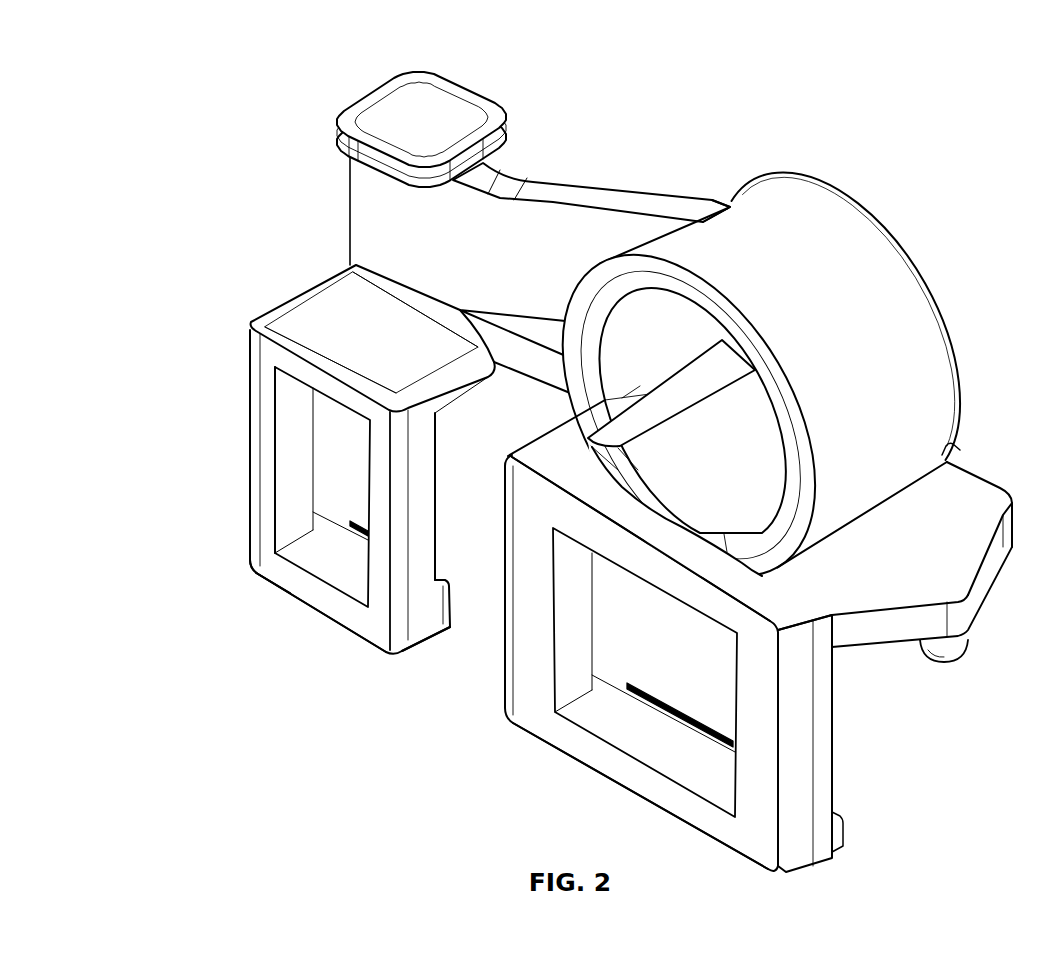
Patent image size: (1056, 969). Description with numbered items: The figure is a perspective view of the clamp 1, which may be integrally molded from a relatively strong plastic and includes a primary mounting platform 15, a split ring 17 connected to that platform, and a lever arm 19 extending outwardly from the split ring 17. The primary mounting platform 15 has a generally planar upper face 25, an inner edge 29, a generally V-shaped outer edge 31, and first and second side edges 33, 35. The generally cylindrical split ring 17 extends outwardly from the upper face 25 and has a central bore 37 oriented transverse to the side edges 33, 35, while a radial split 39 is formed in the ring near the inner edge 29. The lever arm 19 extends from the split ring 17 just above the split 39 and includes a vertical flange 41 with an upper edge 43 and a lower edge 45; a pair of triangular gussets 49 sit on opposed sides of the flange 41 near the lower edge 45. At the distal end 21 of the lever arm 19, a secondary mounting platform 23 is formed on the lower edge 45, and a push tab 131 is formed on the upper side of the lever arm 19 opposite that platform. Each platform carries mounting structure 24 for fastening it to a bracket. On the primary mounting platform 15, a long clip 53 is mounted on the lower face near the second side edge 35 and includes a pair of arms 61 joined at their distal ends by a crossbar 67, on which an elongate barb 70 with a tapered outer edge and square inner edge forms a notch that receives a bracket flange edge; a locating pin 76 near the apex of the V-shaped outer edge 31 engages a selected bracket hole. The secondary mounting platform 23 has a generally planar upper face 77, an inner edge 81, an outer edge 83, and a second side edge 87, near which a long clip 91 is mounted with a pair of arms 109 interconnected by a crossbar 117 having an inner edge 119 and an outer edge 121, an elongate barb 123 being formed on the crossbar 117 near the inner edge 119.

The clamp 1 is at (858, 98).
The primary mounting platform 15 is at (995, 493).
The split ring 17 is at (908, 253).
The lever arm 19 is at (552, 185).
The distal end 21 is at (355, 205).
The secondary mounting platform 23 is at (325, 298).
The mounting structure 24 is at (222, 441).
The upper face 25 is at (893, 554).
The inner edge 29 is at (548, 428).
The outer edge 31 is at (990, 568).
The first side edge 33 is at (956, 462).
The second side edge 35 is at (662, 582).
The central bore 37 is at (777, 431).
The radial split 39 is at (632, 432).
The vertical flange 41 is at (620, 194).
The upper edge 43 is at (547, 197).
The lower edge 45 is at (398, 290).
The triangular gussets 49 is at (508, 317).
The long clip 53 is at (640, 787).
The arms 61 is at (526, 690).
The crossbar 67 is at (584, 750).
The elongate barb 70 is at (690, 720).
The locating pin 76 is at (968, 652).
The upper face 77 is at (385, 343).
The inner edge 81 is at (462, 395).
The outer edge 83 is at (338, 270).
The second side edge 87 is at (310, 381).
The long clip 91 is at (255, 548).
The arms 109 is at (265, 515).
The crossbar 117 is at (342, 621).
The inner edge 119 is at (452, 607).
The outer edge 121 is at (278, 573).
The elongate barb 123 is at (352, 522).
The push tab 131 is at (439, 76).